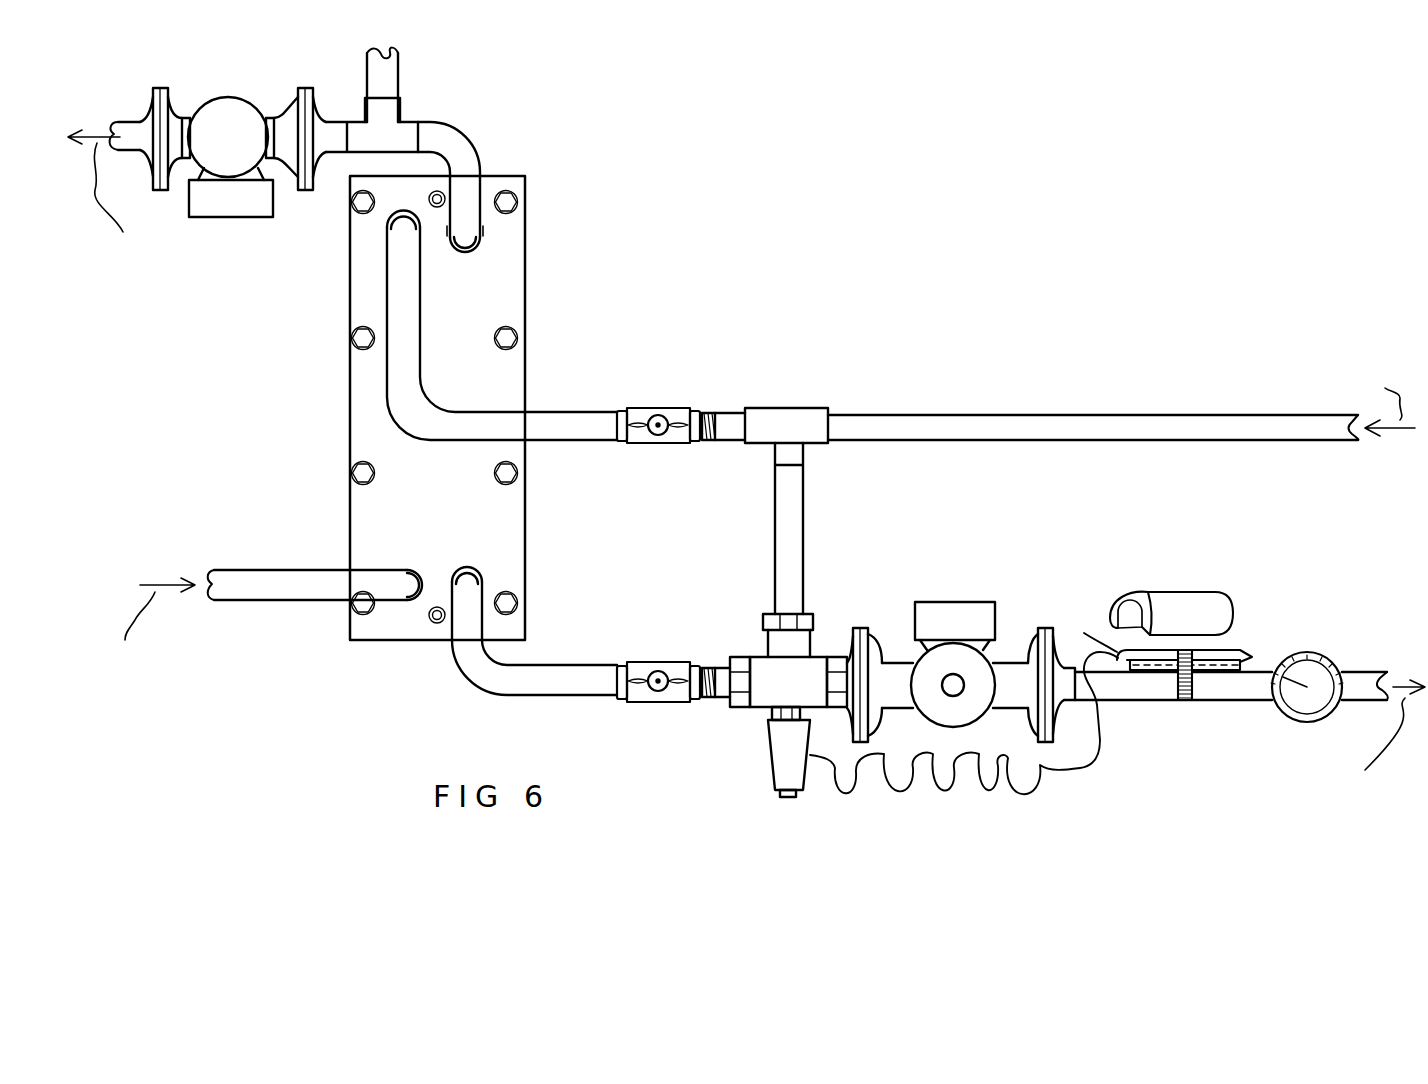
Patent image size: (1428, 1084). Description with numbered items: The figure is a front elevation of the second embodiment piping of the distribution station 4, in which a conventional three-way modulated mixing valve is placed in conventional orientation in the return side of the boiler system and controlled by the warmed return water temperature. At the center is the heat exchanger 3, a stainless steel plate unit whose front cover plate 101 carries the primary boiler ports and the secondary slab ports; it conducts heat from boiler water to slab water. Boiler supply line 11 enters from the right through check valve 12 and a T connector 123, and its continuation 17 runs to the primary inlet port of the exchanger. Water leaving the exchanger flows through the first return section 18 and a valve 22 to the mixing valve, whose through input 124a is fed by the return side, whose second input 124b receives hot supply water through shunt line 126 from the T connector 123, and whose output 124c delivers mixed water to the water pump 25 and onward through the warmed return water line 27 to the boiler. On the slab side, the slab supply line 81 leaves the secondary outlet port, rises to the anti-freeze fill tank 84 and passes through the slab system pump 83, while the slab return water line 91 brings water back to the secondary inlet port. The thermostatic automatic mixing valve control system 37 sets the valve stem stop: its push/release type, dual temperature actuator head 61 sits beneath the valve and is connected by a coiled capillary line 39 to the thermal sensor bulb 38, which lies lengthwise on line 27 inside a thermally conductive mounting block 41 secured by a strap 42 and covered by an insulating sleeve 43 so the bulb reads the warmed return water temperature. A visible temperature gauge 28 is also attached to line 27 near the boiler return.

The heat exchanger 3 is at (527, 170).
The distribution station 4 is at (803, 208).
The boiler supply line 11 is at (893, 415).
The check valve 12 is at (656, 408).
The continuation of the supply line 17 is at (555, 412).
The return water line first section 18 is at (526, 695).
The valve 22 is at (649, 662).
The water pump 25 is at (946, 602).
The warmed return water line 27 is at (1270, 665).
The visible temperature gauge 28 is at (1303, 722).
The thermostatic automatic mixing valve control system 37 is at (1108, 784).
The thermal sensor bulb 38 is at (1090, 629).
The capillary line 39 is at (1031, 794).
The mounting block 41 is at (1113, 670).
The strap 42 is at (1178, 690).
The insulating sleeve 43 is at (1148, 592).
The mixing valve actuator head 61 is at (772, 778).
The slab supply line 81 is at (124, 122).
The slab system pump 83 is at (236, 102).
The anti-freeze fill tank 84 is at (405, 68).
The slab return water line 91 is at (260, 570).
The front cover plate 101 is at (506, 298).
The T connector 123 is at (758, 408).
The first input 124a is at (762, 712).
The second input 124b is at (758, 648).
The output 124c is at (842, 650).
The shunt line 126 is at (806, 513).